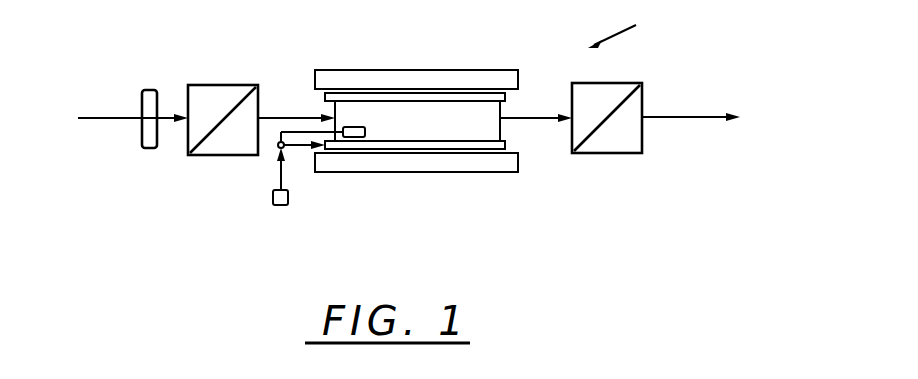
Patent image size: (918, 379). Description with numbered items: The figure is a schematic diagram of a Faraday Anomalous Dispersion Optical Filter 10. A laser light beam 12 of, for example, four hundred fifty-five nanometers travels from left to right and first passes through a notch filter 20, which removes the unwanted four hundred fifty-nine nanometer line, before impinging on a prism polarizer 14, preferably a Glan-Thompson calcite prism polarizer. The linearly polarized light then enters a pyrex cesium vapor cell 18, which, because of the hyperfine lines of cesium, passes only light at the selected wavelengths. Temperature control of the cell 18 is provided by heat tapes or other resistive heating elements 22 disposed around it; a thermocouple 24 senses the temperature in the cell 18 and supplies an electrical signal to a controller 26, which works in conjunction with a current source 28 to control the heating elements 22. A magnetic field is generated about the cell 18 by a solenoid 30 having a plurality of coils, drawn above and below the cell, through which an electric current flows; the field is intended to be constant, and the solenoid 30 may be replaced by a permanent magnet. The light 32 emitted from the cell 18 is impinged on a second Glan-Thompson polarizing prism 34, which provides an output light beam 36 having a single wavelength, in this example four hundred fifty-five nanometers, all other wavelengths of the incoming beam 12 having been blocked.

The Faraday Anomalous Dispersion Optical Filter 10 is at (630, 24).
The laser light beam 12 is at (105, 121).
The prism polarizer 14 is at (236, 85).
The cesium vapor cell 18 is at (418, 103).
The notch filter 20 is at (151, 90).
The heating elements 22 is at (353, 98).
The thermocouple 24 is at (351, 138).
The controller 26 is at (279, 149).
The current source 28 is at (273, 197).
The solenoid 30 is at (482, 78).
The emitted light 32 is at (528, 118).
The second Glan-Thompson polarizing prism 34 is at (611, 153).
The output light beam 36 is at (700, 118).